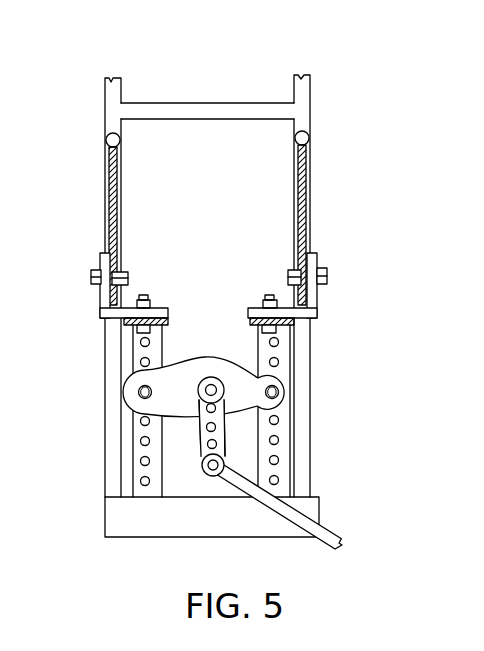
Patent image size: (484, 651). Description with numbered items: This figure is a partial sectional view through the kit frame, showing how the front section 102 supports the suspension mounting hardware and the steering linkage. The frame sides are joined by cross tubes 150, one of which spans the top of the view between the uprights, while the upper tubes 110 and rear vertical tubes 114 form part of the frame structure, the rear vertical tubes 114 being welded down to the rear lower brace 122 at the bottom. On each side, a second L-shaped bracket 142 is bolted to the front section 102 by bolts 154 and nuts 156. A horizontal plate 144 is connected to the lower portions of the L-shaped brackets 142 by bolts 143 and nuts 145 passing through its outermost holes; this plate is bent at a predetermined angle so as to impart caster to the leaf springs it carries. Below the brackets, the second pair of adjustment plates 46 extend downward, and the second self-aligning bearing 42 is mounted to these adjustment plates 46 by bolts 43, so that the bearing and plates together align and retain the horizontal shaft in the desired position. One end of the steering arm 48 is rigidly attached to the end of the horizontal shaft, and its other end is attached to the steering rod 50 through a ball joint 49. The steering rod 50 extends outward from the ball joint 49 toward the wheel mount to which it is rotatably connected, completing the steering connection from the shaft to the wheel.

The upper tube 110 is at (208, 273).
The front section 102 is at (113, 182).
The rear vertical tube 114 is at (108, 152).
The cross tube 150 is at (204, 103).
The rear lower brace 122 is at (320, 504).
The second pair of adjustment plates 46 is at (130, 365).
The second L-shaped bracket 142 is at (100, 262).
The horizontal plate 144 is at (128, 324).
The bolt 154 is at (92, 280).
The nut 156 is at (124, 274).
The nut 145 is at (150, 294).
The bolt 143 is at (152, 326).
The second self-aligning bearing 42 is at (289, 380).
The bolt 43 is at (130, 398).
The steering arm 48 is at (200, 446).
The ball joint 49 is at (207, 476).
The steering rod 50 is at (340, 532).